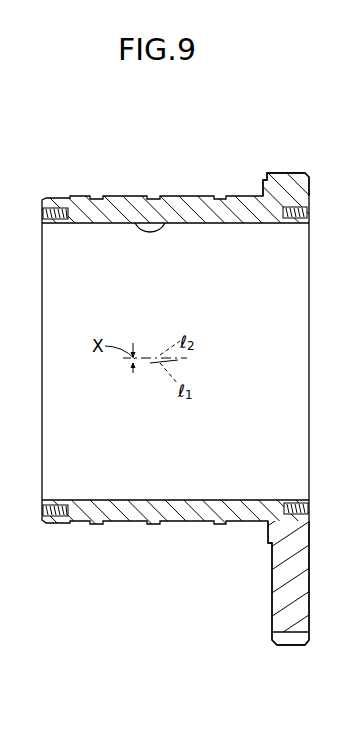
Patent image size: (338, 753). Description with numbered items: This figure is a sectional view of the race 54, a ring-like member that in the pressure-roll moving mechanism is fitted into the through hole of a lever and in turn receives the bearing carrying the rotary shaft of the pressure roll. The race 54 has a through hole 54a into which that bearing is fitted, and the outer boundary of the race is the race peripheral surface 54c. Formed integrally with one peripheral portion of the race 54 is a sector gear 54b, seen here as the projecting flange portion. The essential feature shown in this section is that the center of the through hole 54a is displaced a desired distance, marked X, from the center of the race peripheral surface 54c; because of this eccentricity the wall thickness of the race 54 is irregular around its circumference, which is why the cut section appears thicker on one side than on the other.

The race 54 is at (85, 197).
The through hole 54a is at (166, 224).
The sector gear 54b is at (280, 642).
The race peripheral surface 54c is at (208, 195).